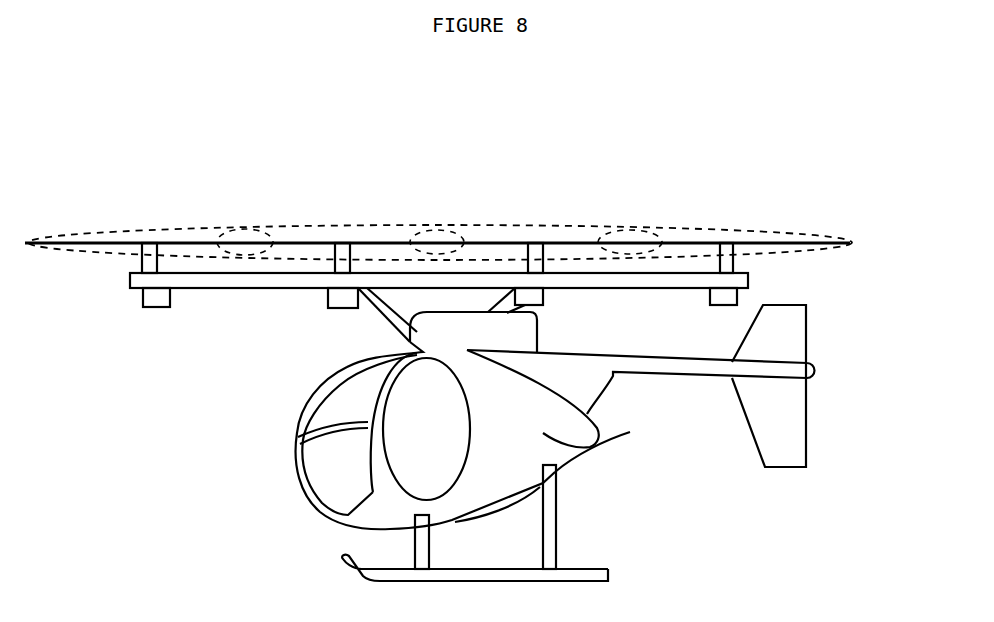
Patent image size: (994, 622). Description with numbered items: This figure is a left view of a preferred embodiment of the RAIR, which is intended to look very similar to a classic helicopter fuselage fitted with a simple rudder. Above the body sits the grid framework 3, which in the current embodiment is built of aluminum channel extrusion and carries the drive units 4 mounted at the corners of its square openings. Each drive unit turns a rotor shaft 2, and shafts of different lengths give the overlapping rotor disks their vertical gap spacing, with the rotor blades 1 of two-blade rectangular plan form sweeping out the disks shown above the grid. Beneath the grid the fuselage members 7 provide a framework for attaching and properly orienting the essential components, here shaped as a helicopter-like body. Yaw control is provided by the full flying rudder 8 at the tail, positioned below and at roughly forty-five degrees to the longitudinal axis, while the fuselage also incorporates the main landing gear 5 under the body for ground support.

The rotor blades 1 is at (792, 243).
The rotor shafts 2 is at (142, 257).
The framework 3 is at (745, 285).
The drive units 4 is at (158, 295).
The main landing gear wheels 5 is at (597, 573).
The fuselage members 7 is at (630, 432).
The rudder 8 is at (772, 413).